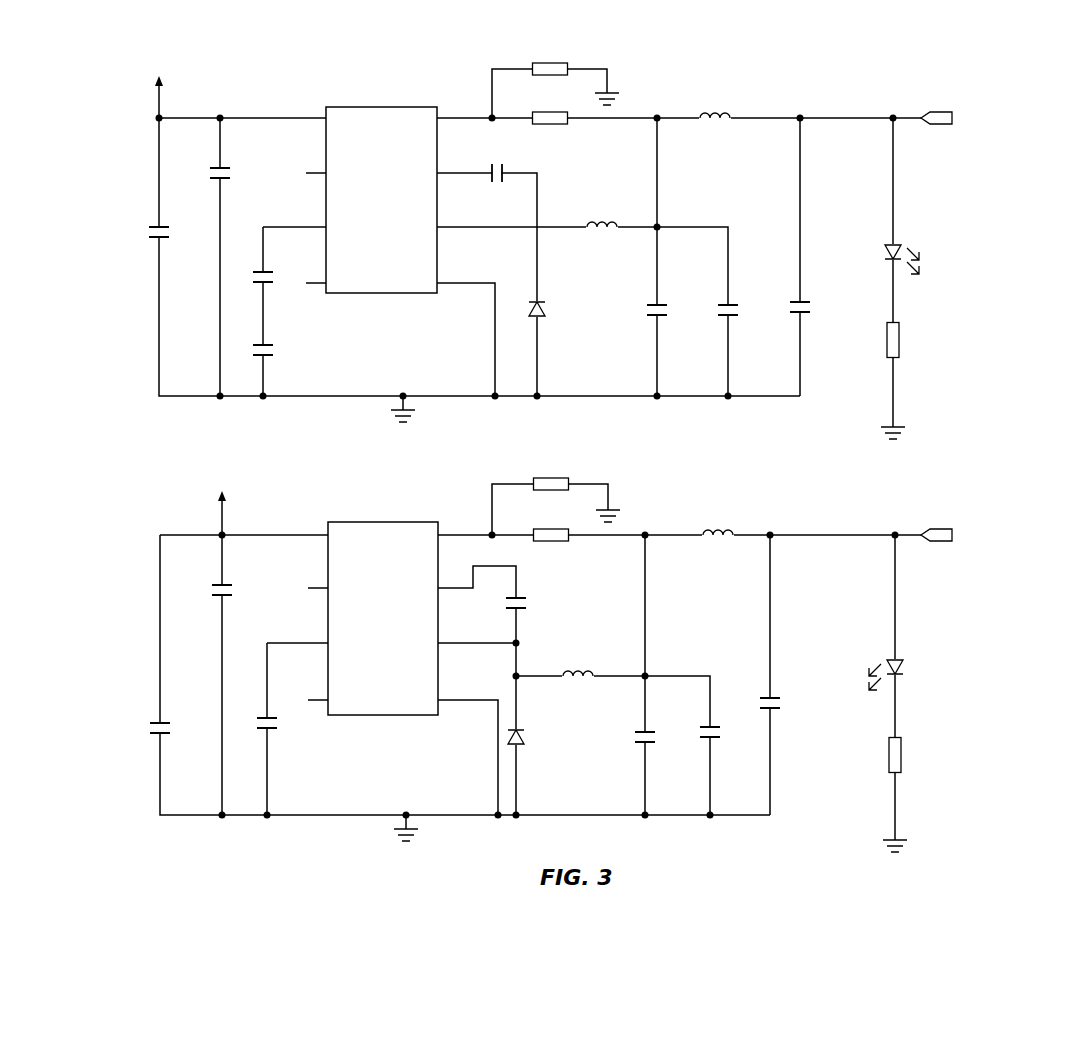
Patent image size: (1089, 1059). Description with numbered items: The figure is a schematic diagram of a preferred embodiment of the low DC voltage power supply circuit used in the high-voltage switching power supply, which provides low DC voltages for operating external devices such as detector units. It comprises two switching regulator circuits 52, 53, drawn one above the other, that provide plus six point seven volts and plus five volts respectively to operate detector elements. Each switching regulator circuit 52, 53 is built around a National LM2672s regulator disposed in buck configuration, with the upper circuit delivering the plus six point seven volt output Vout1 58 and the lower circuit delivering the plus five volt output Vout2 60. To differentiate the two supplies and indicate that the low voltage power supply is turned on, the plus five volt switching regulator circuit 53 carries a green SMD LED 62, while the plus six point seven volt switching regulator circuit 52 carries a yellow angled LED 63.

The switching regulator circuit 52 is at (126, 100).
The switching regulator circuit 53 is at (126, 517).
The +6.7V output (Vout1) 58 is at (936, 112).
The +5V output (Vout2) 60 is at (936, 529).
The green SMD LED 62 is at (899, 660).
The yellow angled LED 63 is at (897, 246).